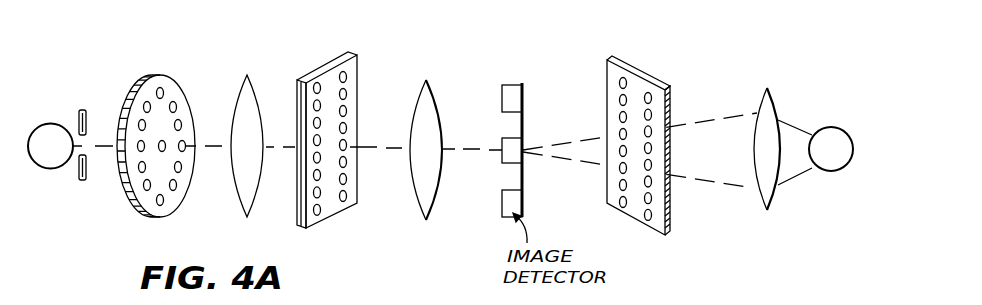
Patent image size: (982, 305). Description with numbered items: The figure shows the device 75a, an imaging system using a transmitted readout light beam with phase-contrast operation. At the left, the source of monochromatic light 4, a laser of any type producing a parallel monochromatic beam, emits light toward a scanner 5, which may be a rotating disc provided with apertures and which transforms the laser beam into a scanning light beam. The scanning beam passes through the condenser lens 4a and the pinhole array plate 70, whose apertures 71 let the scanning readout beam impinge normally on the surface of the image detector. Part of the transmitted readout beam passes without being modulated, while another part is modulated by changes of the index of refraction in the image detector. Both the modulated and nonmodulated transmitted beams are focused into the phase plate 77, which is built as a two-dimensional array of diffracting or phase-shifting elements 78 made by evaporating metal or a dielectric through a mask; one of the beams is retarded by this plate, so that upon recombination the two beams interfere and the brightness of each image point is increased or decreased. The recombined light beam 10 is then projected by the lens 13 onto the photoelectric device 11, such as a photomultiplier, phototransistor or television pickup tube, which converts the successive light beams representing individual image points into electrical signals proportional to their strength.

The laser 4 is at (50, 160).
The scanner 5 is at (160, 213).
The pinhole array plate 70 is at (343, 208).
The apertures 71 is at (314, 211).
The condenser lens 4a is at (427, 203).
The device 75a is at (472, 58).
The phase plate 77 is at (648, 232).
The diffracting elements 78 is at (651, 97).
The lens 13 is at (765, 198).
The recombined light beam 10 is at (788, 122).
The photoelectric device 11 is at (830, 160).